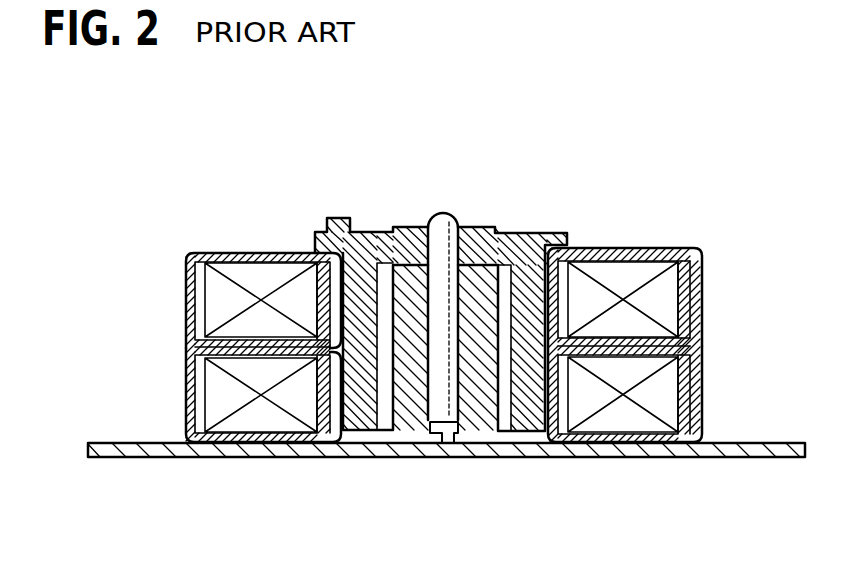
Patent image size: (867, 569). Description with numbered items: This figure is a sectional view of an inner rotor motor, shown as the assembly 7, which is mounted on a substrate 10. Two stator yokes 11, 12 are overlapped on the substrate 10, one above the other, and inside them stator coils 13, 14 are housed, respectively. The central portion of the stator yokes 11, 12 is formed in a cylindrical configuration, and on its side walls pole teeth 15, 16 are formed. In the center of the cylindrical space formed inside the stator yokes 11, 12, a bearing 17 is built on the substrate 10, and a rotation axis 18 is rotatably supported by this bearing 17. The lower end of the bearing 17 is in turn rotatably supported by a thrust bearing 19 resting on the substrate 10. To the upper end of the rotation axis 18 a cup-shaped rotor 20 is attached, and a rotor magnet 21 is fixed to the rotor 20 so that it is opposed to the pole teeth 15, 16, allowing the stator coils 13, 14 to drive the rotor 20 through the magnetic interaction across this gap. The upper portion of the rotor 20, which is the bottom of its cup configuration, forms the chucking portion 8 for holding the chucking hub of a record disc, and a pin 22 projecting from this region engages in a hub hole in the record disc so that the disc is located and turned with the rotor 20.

The electromagnetic actuator (prior art) 7 is at (670, 205).
The chucking portion 8 is at (410, 247).
The substrate 10 is at (752, 450).
The stator yoke 11 is at (697, 395).
The stator yoke 12 is at (697, 300).
The stator coil 13 is at (237, 420).
The stator coil 14 is at (223, 302).
The pole teeth 15 is at (318, 415).
The pole teeth 16 is at (330, 308).
The bearing 17 is at (412, 405).
The rotation axis 18 is at (440, 240).
The thrust bearing 19 is at (443, 437).
The cup-shaped rotor 20 is at (520, 290).
The rotor magnet 21 is at (343, 292).
The pin 22 is at (337, 217).